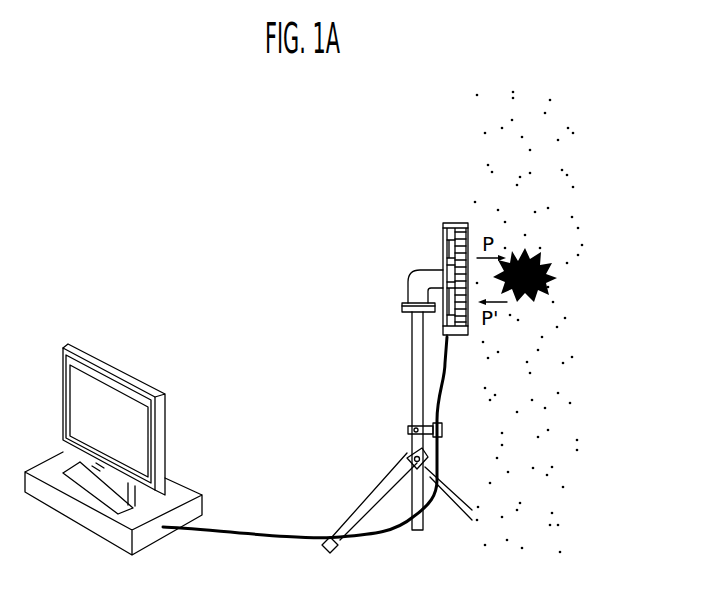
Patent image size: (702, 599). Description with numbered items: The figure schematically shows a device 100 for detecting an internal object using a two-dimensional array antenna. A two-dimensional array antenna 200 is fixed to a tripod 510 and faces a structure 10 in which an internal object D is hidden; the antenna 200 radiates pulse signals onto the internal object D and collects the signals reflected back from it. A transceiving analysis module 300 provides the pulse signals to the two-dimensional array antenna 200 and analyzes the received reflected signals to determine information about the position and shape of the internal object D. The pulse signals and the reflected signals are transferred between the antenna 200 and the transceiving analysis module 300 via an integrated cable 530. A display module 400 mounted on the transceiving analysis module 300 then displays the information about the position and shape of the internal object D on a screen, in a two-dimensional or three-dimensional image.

The dust measuring system 100 is at (151, 145).
The structure 10 is at (570, 143).
The internal object D is at (547, 268).
The two-dimensional array antenna 200 is at (452, 222).
The transceiving analysis module 300 is at (85, 522).
The display module 400 is at (127, 378).
The tripod 510 is at (413, 387).
The integrated cable 530 is at (247, 528).